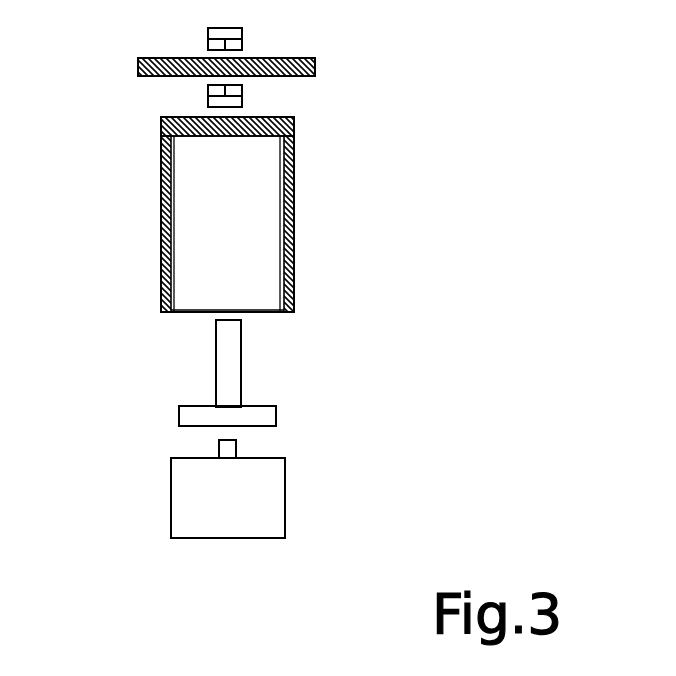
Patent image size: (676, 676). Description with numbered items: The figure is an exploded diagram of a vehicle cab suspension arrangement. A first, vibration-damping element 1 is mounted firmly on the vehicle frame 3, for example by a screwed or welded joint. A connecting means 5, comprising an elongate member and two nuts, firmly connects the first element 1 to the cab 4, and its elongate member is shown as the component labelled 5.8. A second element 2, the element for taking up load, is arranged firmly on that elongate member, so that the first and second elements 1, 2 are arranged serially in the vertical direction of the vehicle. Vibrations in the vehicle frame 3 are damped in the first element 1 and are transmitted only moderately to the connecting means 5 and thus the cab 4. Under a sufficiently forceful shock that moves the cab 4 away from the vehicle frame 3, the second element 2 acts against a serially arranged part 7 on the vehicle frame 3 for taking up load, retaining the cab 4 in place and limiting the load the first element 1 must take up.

The first vibration-damping element 1 is at (267, 504).
The second element 2 is at (267, 416).
The vehicle frame 3 is at (249, 210).
The cab 4 is at (315, 59).
The connecting means 5 is at (207, 42).
The shaft 5.8 is at (226, 358).
The serially arranged part 7 is at (166, 197).